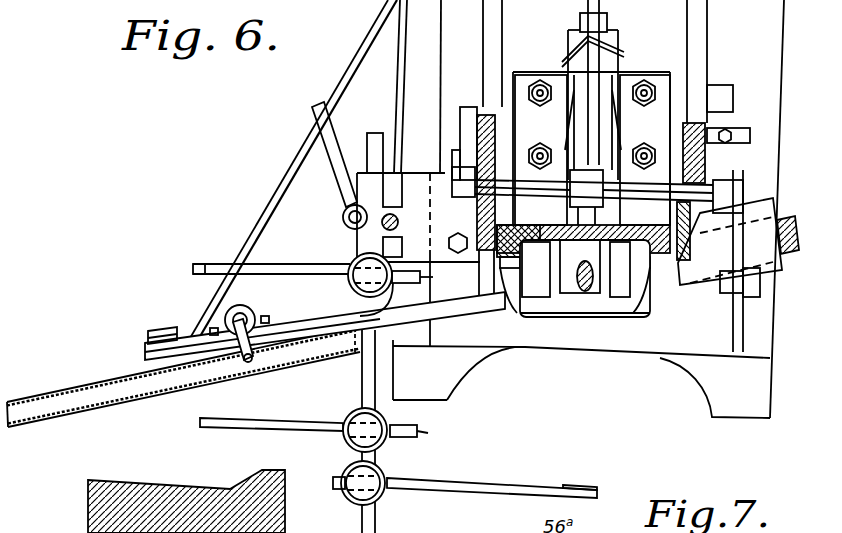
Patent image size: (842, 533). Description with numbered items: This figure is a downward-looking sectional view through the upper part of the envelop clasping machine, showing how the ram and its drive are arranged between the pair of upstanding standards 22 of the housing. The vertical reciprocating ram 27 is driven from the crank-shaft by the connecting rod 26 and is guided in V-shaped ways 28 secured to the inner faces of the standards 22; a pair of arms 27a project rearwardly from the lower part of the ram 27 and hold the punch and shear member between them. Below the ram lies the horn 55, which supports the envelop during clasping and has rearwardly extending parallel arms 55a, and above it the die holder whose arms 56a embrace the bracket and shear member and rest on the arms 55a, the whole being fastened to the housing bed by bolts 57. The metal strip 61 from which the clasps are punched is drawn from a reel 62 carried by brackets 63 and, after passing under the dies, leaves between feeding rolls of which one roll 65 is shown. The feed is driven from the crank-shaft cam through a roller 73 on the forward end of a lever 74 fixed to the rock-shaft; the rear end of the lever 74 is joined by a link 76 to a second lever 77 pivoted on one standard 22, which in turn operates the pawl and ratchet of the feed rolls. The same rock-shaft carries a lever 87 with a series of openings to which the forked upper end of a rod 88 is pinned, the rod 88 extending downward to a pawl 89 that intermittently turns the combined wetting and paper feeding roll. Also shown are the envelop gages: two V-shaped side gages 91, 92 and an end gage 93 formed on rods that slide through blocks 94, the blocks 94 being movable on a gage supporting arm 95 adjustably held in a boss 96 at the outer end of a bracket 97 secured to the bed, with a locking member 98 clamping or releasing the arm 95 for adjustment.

The standards 22 is at (487, 140).
The connecting rod 26 is at (592, 300).
The ram 27 is at (542, 290).
The arms 27a is at (600, 213).
The V-shaped ways 28 is at (504, 260).
The horn 55 is at (597, 330).
The arms 55a is at (507, 72).
The arms 56a is at (524, 82).
The bolts 57 is at (538, 145).
The metal strip 61 is at (477, 317).
The reel 62 is at (56, 390).
The brackets 63 is at (216, 289).
The feeding roll 65 is at (792, 258).
The roller 73 is at (750, 300).
The lever 74 is at (776, 214).
The link 76 is at (735, 133).
The second lever 77 is at (728, 120).
The lever 87 is at (592, 82).
The rod 88 is at (612, 52).
The pawl 89 is at (612, 112).
The side gage 91 is at (314, 441).
The side gage 92 is at (313, 284).
The end gage 93 is at (580, 486).
The blocks 94 is at (348, 450).
The gage supporting arm 95 is at (376, 505).
The boss 96 is at (362, 241).
The bracket 97 is at (405, 226).
The locking member 98 is at (341, 183).